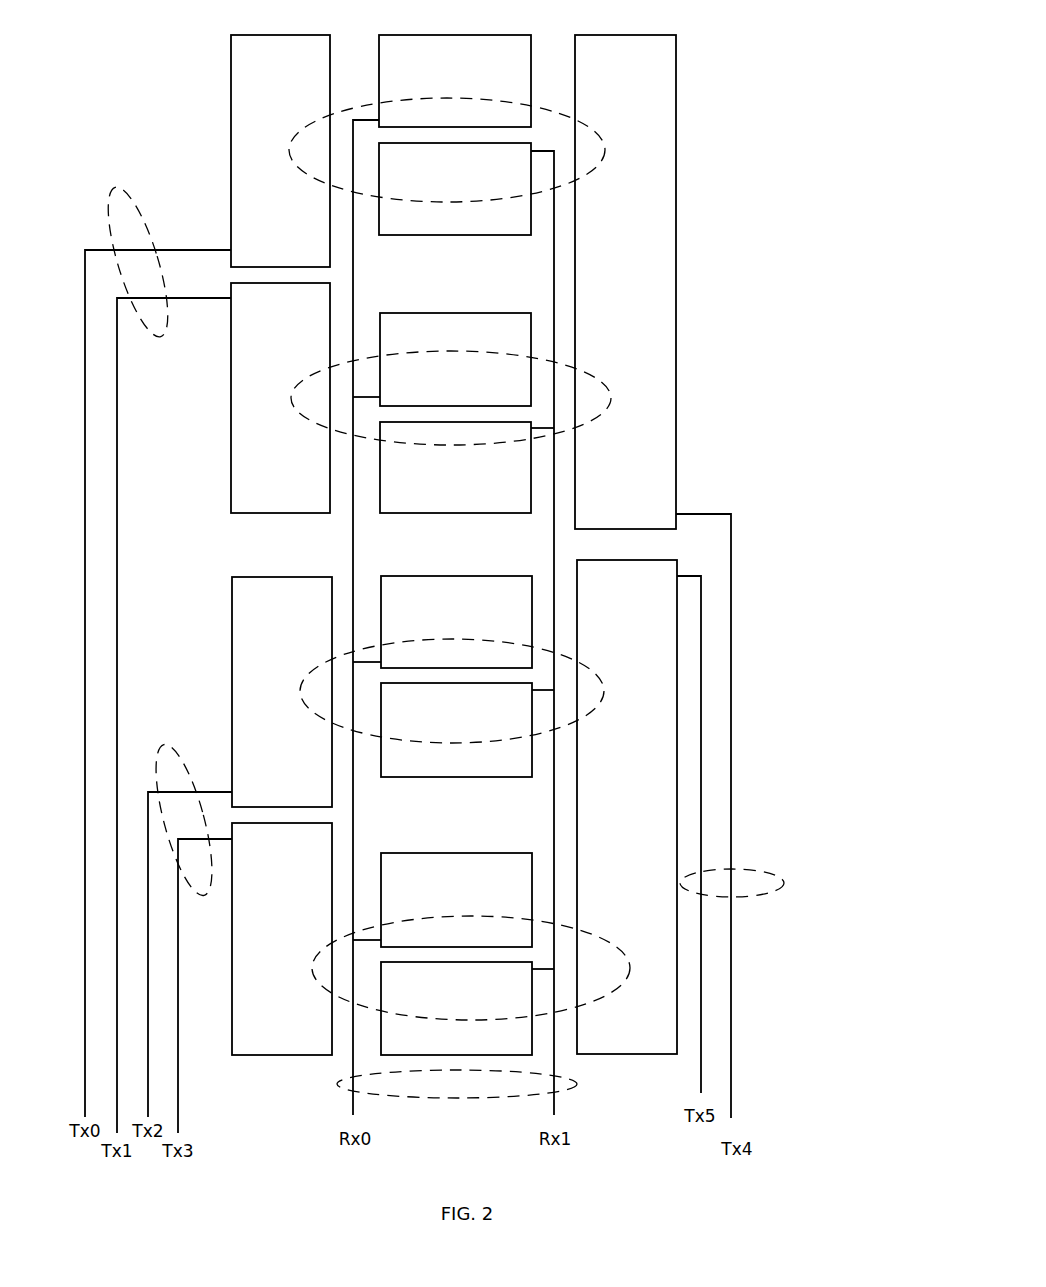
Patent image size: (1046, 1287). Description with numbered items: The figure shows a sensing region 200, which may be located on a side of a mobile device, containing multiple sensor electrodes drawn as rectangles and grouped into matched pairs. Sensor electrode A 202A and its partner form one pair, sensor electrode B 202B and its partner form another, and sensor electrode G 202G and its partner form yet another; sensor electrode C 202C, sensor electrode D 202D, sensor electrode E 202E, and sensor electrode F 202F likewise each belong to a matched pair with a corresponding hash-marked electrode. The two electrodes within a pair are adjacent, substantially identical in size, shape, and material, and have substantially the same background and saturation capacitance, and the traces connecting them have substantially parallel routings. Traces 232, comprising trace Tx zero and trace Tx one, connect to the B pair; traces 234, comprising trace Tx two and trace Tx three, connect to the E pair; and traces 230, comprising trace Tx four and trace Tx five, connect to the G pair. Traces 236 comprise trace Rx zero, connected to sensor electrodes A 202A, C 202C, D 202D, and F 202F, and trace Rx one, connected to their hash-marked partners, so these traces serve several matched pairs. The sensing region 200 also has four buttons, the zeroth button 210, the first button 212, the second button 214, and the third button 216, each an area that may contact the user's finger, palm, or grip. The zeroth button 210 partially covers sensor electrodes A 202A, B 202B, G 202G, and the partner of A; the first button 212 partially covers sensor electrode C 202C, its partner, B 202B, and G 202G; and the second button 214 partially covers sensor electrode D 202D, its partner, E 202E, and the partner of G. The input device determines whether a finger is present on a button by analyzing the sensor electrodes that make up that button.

The sensing region 200 is at (828, 152).
The sensor electrode A 202A is at (455, 81).
The sensor electrode B 202B is at (280, 151).
The sensor electrode C 202C is at (455, 359).
The sensor electrode D 202D is at (456, 622).
The sensor electrode E 202E is at (282, 692).
The sensor electrode F 202F is at (456, 900).
The sensor electrode G 202G is at (625, 282).
The button 0 210 is at (602, 154).
The button 1 212 is at (607, 414).
The button 2 214 is at (343, 653).
The button 3 216 is at (345, 1000).
The traces 230 is at (739, 869).
The traces 232 is at (115, 188).
The traces 234 is at (173, 759).
The traces 236 is at (578, 1085).